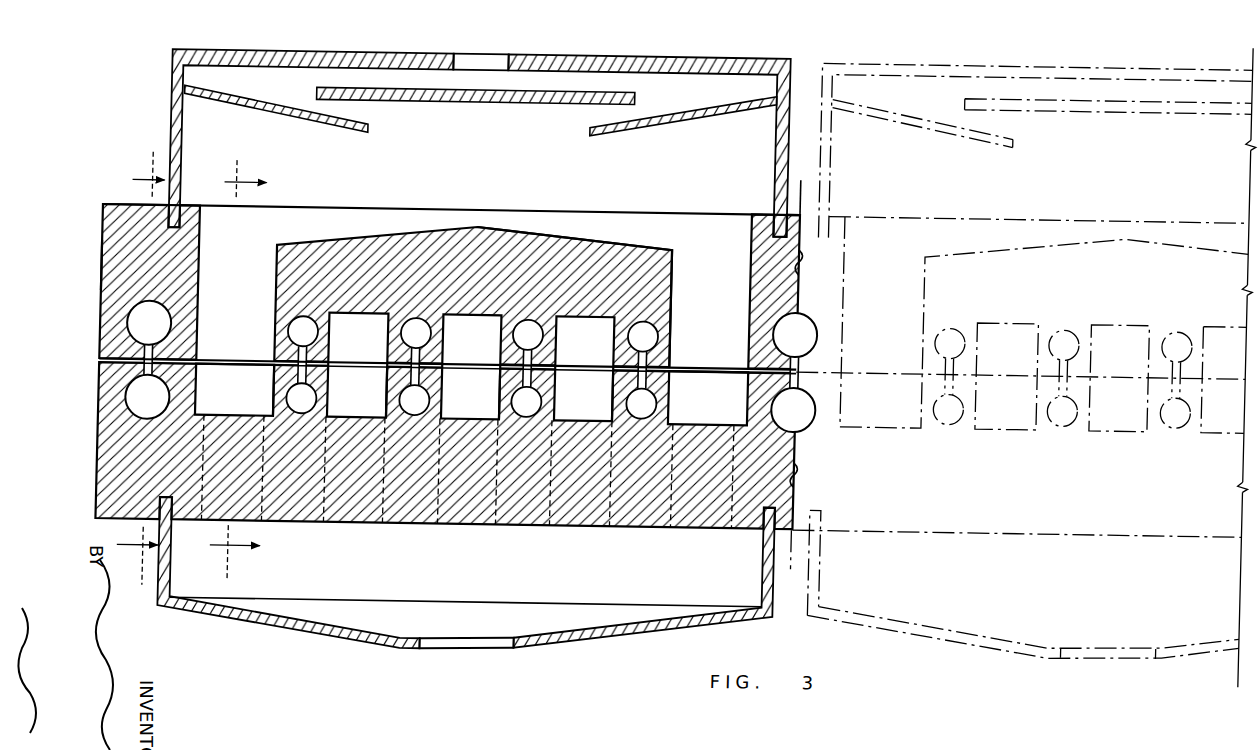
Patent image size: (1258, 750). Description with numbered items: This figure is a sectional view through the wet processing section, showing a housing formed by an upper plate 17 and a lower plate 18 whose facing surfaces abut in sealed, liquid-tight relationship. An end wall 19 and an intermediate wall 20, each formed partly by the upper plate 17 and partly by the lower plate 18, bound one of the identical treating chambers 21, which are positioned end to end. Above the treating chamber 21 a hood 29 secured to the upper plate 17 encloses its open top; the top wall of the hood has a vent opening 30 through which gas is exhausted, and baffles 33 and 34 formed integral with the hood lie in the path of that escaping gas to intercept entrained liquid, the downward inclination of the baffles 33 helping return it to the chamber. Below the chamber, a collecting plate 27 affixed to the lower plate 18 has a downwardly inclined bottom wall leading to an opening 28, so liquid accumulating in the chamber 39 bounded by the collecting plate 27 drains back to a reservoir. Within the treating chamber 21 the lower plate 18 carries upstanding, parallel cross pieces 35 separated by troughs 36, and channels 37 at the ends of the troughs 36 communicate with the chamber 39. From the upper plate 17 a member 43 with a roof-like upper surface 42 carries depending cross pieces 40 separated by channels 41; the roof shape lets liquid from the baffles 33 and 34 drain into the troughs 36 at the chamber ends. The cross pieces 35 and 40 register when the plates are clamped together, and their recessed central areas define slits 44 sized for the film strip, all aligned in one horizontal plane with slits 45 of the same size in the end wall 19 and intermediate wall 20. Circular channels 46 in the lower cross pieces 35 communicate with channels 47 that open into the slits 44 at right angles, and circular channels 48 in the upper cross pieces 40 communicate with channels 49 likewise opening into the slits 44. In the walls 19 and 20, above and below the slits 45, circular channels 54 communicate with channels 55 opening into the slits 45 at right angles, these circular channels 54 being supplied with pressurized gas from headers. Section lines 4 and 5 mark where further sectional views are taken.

The section line 4- 4 is at (141, 368).
The section line 5- 5 is at (238, 369).
The upper plate 17 is at (105, 222).
The lower plate 18 is at (116, 440).
The end wall 19 is at (101, 262).
The intermediate wall 20 is at (827, 273).
The treating chamber 21 is at (224, 261).
The collecting plate 27 is at (338, 616).
The opening 28 is at (481, 642).
The hood 29 is at (358, 48).
The vent opening 30 is at (482, 51).
The baffle 33 is at (306, 115).
The baffle 34 is at (467, 94).
The cross piece 35 is at (282, 372).
The trough 36 is at (351, 406).
The channel 37 is at (367, 498).
The chamber 39 is at (609, 557).
The cross piece 40 is at (290, 319).
The channel 41 is at (352, 346).
The upper surface 42 is at (373, 236).
The member 43 is at (524, 238).
The slit 44 is at (281, 347).
The slit 45 is at (124, 357).
The circular channel 46 is at (295, 392).
The channel 47 is at (406, 380).
The circular channel 48 is at (406, 327).
The channel 49 is at (409, 361).
The circular channel 54 is at (152, 314).
The channel 55 is at (134, 372).